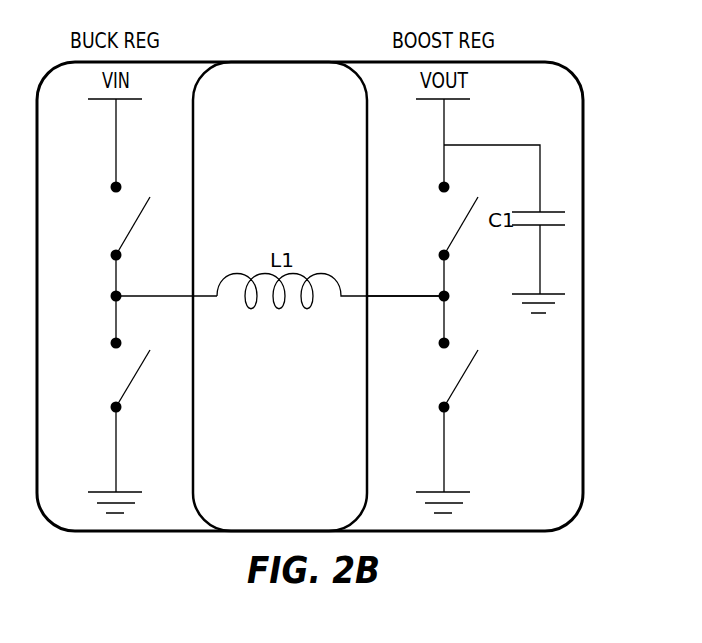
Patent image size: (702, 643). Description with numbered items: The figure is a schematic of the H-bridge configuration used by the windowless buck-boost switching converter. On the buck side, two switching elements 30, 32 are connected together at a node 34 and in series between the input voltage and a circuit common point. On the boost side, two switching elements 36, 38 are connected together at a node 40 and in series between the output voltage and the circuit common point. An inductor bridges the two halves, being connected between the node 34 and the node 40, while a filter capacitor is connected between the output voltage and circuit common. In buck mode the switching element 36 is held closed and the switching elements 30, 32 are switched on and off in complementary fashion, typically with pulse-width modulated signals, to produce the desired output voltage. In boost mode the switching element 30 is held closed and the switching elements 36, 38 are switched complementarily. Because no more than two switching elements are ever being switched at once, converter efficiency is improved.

The switching element 30 is at (102, 210).
The switching element 32 is at (102, 362).
The node 34 is at (111, 296).
The switching element 36 is at (430, 210).
The switching element 38 is at (430, 362).
The node 40 is at (450, 296).